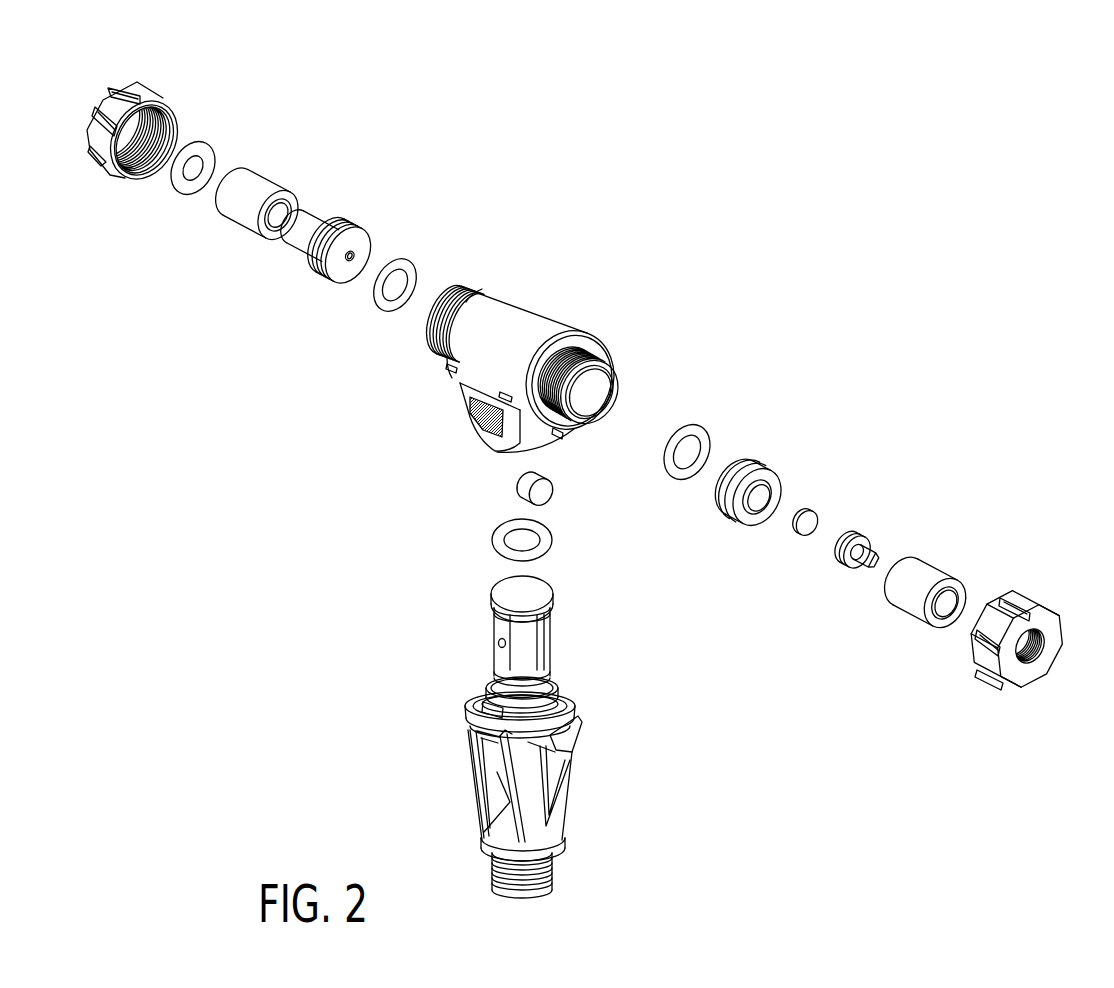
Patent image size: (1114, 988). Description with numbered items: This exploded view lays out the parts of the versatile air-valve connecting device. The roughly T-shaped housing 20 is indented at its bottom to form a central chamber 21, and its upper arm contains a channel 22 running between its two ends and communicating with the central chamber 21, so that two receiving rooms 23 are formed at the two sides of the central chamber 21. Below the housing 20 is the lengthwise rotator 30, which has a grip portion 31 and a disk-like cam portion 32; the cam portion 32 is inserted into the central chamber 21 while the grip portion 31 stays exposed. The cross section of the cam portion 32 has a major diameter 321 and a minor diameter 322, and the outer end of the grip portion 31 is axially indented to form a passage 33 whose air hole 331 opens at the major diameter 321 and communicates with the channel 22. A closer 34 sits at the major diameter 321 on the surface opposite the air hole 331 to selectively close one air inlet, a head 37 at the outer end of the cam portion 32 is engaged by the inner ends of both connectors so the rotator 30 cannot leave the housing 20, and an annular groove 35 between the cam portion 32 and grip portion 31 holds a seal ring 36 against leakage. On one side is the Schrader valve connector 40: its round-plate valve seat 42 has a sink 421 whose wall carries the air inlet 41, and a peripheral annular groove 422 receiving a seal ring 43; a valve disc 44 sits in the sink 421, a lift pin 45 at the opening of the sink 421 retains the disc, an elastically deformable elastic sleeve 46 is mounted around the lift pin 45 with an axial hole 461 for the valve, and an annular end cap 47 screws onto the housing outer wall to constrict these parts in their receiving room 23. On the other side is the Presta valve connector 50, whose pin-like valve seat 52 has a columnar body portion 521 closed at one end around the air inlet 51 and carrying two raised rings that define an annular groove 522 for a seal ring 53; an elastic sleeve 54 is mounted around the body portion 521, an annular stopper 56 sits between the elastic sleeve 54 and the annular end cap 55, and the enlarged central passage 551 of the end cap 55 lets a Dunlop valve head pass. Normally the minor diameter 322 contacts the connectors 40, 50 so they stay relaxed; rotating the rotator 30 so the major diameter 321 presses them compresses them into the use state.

The housing 20 is at (513, 379).
The central chamber 21 is at (483, 445).
The channel 22 is at (591, 381).
The receiving rooms 23 is at (427, 326).
The rotator 30 is at (520, 729).
The grip portion 31 is at (498, 773).
The cam portion 32 is at (530, 615).
The major diameter 321 is at (500, 625).
The minor diameter 322 is at (540, 653).
The passage 33 is at (507, 892).
The air hole 331 is at (497, 643).
The closer 34 is at (543, 493).
The annular groove 35 is at (557, 683).
The seal ring 36 is at (552, 542).
The head 37 is at (512, 590).
The Schrader valve connector 40 is at (870, 513).
The air inlet 41 is at (783, 478).
The valve seat 42 is at (783, 453).
The sink 421 is at (773, 487).
The annular groove 422 is at (760, 462).
The seal ring 43 is at (705, 427).
The valve disc 44 is at (812, 515).
The lift pin 45 is at (867, 532).
The elastic sleeve 46 is at (957, 571).
The axial hole 461 is at (953, 597).
The end cap 47 is at (1022, 620).
The Presta valve connector 50 is at (259, 225).
The air inlet 51 is at (350, 263).
The valve seat 52 is at (316, 268).
The body portion 521 is at (308, 242).
The annular groove 522 is at (320, 268).
The seal ring 53 is at (414, 268).
The elastic sleeve 54 is at (242, 220).
The end cap 55 is at (147, 159).
The central passage 551 is at (137, 124).
The annular stopper 56 is at (177, 190).